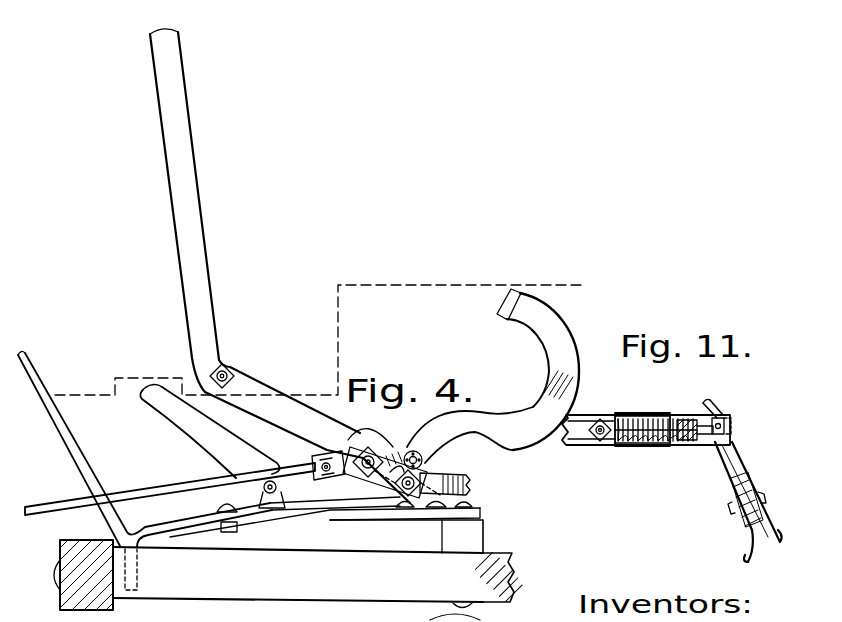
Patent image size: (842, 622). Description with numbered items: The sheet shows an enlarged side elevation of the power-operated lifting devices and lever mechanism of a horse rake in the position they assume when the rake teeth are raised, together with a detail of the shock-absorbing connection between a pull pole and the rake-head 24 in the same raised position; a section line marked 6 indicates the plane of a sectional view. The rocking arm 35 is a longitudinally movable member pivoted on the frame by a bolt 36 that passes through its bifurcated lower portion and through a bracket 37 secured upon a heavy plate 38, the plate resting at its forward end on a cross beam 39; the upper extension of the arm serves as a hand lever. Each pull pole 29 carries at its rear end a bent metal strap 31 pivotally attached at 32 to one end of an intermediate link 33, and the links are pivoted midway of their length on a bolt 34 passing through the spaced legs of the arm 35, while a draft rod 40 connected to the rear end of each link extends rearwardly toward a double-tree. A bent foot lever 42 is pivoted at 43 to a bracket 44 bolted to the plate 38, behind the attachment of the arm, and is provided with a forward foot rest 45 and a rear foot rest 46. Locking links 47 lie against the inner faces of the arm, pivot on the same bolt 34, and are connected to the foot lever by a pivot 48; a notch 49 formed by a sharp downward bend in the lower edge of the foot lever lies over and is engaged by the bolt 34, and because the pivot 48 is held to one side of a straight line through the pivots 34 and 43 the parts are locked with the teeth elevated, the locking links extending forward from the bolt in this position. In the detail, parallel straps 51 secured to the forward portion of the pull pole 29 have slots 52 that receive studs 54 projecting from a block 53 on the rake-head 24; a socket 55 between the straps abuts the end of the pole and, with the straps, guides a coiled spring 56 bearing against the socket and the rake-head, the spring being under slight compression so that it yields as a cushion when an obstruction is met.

In FIG. 4, the section line 6- 6 is at (56, 389).
In FIG. 4, the rocking arm 35 is at (205, 335).
In FIG. 4, the foot rest 46 is at (141, 400).
In FIG. 4, the draft rod 40 is at (68, 506).
In FIG. 4, the plate 38 is at (183, 532).
In FIG. 4, the pivot 43 is at (267, 494).
In FIG. 4, the bracket 44 is at (283, 481).
In FIG. 4, the pivot 32 is at (396, 504).
In FIG. 4, the bolt 36 is at (432, 507).
In FIG. 4, the bracket 37 is at (482, 513).
In FIG. 4, the cross beam 39 is at (406, 536).
In FIG. 4, the link 33 is at (344, 476).
In FIG. 4, the bolt 34 is at (398, 490).
In FIG. 4, the pivot 48 is at (433, 462).
In FIG. 4, the locking link 47 is at (407, 446).
In FIG. 4, the bent metal strap 31 is at (472, 485).
In FIG. 4, the notch 49 is at (468, 430).
In FIG. 4, the foot lever 42 is at (529, 408).
In FIG. 4, the foot rest 45 is at (510, 299).
In FIG. 11, the pull pole 29 is at (574, 446).
In FIG. 11, the strap 51 is at (594, 438).
In FIG. 11, the socket 55 is at (668, 412).
In FIG. 11, the coiled spring 56 is at (656, 448).
In FIG. 11, the slot 52 is at (690, 442).
In FIG. 11, the stud 54 is at (721, 419).
In FIG. 11, the block 53 is at (706, 402).
In FIG. 11, the rake-head 24 is at (733, 488).